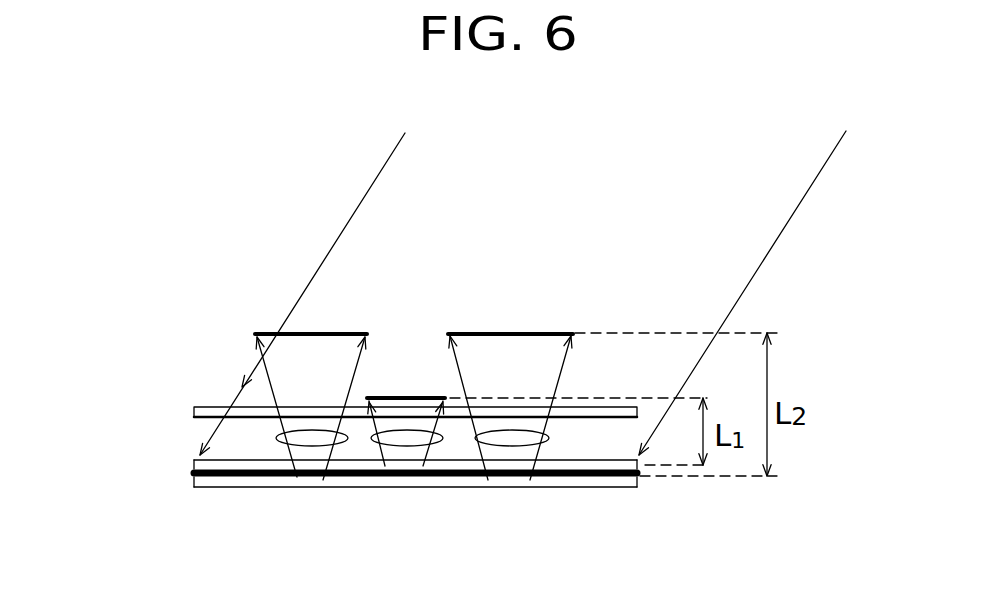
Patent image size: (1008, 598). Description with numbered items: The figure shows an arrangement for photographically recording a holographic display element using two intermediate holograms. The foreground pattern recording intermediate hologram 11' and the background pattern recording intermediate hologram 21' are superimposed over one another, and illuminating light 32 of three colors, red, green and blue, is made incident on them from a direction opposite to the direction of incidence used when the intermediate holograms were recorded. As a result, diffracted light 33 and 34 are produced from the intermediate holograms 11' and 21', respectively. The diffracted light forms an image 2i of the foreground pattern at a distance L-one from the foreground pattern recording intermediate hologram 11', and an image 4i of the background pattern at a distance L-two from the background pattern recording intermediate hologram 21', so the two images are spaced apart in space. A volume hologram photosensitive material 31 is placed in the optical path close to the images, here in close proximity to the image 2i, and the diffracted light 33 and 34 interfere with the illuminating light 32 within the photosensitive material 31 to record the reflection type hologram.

The image of the background pattern 4i is at (330, 332).
The image of the foreground pattern 2i is at (405, 397).
The volume hologram photosensitive material 31 is at (193, 412).
The illuminating light 32 is at (783, 230).
The foreground pattern recording intermediate hologram 11' is at (376, 457).
The background pattern recording intermediate hologram 21' is at (373, 486).
The diffracted light 33 is at (437, 446).
The diffracted light 34 is at (284, 444).